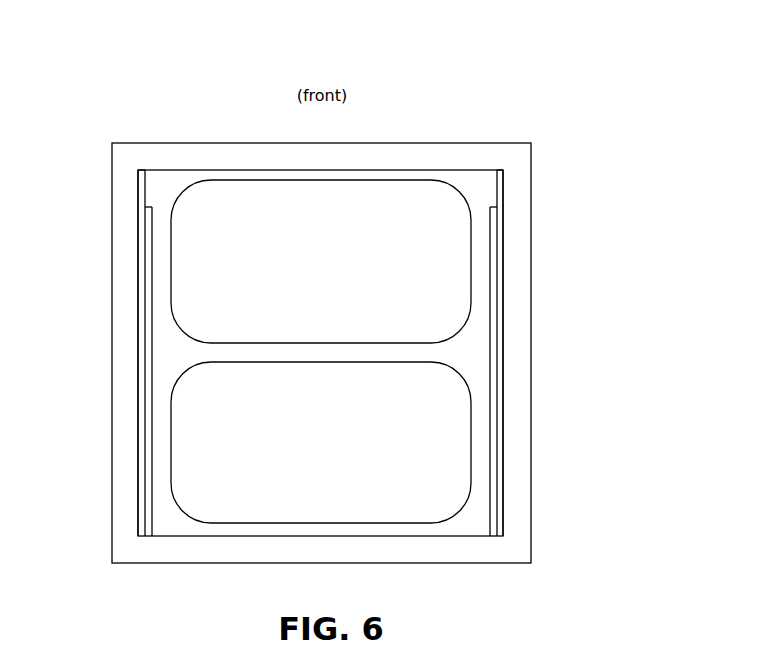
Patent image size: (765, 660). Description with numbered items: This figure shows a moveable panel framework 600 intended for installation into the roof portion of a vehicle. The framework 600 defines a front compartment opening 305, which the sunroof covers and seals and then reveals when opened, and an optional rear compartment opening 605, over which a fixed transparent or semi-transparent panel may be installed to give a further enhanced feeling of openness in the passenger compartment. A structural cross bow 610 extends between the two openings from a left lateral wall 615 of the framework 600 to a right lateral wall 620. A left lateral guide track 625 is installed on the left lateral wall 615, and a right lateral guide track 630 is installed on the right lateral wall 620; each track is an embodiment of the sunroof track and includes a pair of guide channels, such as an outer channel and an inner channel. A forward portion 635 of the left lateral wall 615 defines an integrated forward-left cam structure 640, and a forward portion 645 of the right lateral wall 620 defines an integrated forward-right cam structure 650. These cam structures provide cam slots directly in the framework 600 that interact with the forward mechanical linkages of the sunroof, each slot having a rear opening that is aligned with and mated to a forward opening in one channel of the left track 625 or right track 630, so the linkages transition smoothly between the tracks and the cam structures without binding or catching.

The moveable panel framework 600 is at (600, 71).
The front compartment opening 305 is at (338, 270).
The rear compartment opening 605 is at (338, 450).
The structural cross bow 610 is at (322, 353).
The left lateral wall 615 is at (126, 326).
The right lateral wall 620 is at (514, 326).
The left lateral guide track 625 is at (137, 260).
The right lateral guide track 630 is at (503, 260).
The forward portion of left lateral wall 635 is at (126, 181).
The forward portion of right lateral wall 645 is at (514, 181).
The forward-left cam structure 640 is at (145, 193).
The forward-right cam structure 650 is at (498, 192).